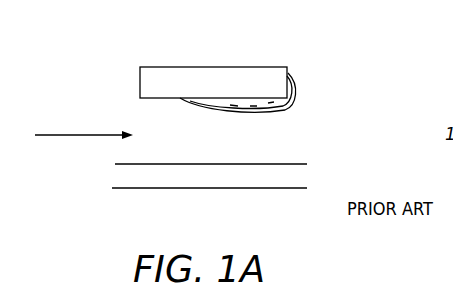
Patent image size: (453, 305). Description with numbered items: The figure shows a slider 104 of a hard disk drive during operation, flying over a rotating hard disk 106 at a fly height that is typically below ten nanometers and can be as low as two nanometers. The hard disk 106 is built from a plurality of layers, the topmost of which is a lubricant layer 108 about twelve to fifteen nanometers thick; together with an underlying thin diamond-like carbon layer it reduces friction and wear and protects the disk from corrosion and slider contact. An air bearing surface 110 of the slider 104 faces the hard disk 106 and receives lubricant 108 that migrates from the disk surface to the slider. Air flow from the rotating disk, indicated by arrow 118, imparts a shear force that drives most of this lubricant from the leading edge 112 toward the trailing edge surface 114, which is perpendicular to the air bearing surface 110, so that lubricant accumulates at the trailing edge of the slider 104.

The slider 104 is at (243, 93).
The hard disk 106 is at (293, 164).
The lubricant layer 108 is at (112, 185).
The air bearing surface 110 is at (155, 120).
The leading edge 112 is at (129, 83).
The trailing edge surface 114 is at (295, 61).
The arrow indicating air flow 118 is at (52, 139).